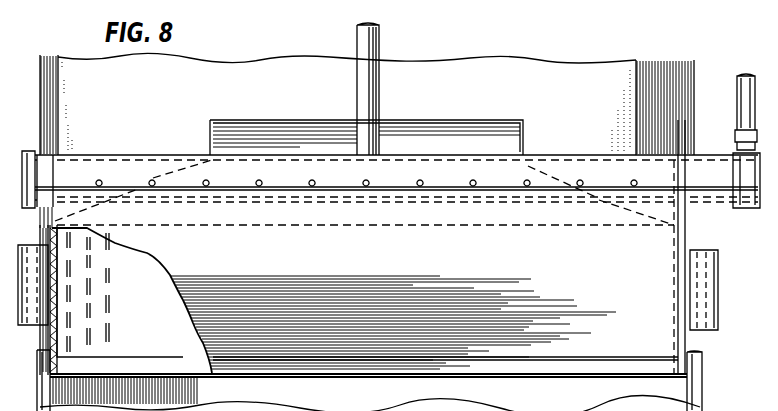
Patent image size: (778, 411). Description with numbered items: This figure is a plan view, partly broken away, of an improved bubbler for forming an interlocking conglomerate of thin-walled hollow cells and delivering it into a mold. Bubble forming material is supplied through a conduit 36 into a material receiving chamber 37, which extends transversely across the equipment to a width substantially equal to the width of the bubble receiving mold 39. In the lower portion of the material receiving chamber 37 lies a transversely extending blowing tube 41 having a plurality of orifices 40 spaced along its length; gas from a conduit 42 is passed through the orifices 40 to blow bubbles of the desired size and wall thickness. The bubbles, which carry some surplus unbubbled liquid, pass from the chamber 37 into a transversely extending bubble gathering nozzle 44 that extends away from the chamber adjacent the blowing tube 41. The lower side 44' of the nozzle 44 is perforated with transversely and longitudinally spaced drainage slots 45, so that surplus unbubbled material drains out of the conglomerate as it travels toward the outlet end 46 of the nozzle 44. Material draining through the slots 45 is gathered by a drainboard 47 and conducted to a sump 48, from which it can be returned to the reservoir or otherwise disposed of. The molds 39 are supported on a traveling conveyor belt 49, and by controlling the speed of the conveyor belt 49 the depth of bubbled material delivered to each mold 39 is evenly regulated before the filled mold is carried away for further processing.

The conduit 36 is at (366, 90).
The material receiving chamber 37 is at (560, 170).
The bubble receiving mold 39 is at (702, 372).
The orifices 40 is at (470, 178).
The blowing tube 41 is at (715, 184).
The conduit 42 is at (745, 100).
The bubble gathering nozzle 44 is at (368, 338).
The lower side of nozzle 44' is at (117, 374).
The drainage slots 45 is at (88, 290).
The outlet end 46 is at (428, 375).
The drainboard 47 is at (150, 179).
The sump 48 is at (496, 137).
The conveyor belt 49 is at (676, 88).